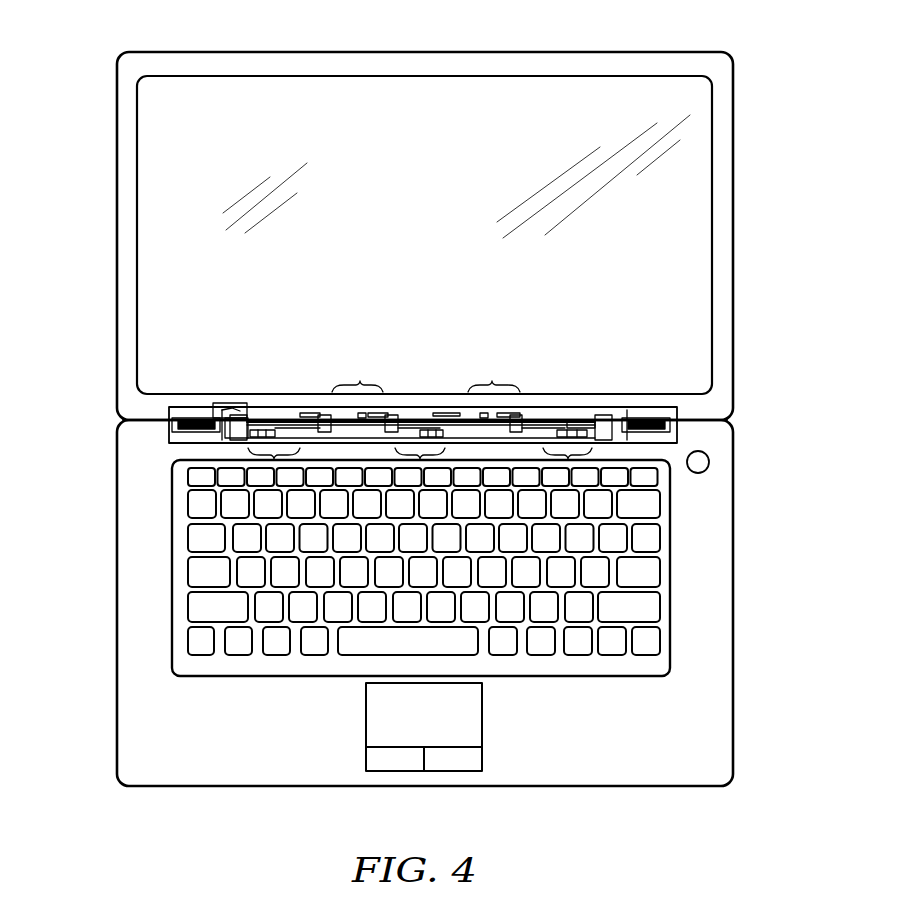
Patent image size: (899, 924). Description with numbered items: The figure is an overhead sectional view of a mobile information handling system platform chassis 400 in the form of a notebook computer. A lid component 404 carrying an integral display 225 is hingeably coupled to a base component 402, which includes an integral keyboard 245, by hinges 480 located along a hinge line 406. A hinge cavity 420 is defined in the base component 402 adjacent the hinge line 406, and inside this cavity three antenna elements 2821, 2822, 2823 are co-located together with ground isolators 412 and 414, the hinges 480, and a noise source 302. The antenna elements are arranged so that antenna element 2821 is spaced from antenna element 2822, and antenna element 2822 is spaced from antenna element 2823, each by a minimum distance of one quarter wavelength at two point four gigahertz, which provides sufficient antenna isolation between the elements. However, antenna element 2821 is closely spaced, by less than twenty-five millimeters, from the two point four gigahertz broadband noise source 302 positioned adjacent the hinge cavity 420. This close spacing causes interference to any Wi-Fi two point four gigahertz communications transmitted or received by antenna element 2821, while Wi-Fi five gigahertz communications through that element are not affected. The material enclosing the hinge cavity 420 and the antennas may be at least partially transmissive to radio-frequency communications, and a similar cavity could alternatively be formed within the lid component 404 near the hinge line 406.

The mobile information handling system platform chassis 400 is at (435, 401).
The display 225 is at (165, 233).
The lid component 404 is at (386, 236).
The hinge line 406 is at (117, 418).
The base component 402 is at (117, 478).
The keyboard 245 is at (648, 508).
The hinge cavity 420 is at (422, 476).
The hinges 480 is at (195, 424).
The noise source 302 is at (233, 405).
The ground isolator 412 is at (360, 381).
The ground isolator 414 is at (492, 381).
The antenna element 2821 is at (168, 501).
The antenna element 2822 is at (238, 527).
The antenna element 2823 is at (678, 479).